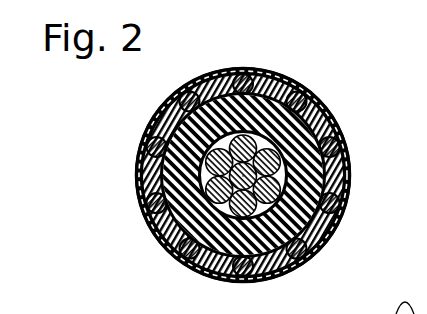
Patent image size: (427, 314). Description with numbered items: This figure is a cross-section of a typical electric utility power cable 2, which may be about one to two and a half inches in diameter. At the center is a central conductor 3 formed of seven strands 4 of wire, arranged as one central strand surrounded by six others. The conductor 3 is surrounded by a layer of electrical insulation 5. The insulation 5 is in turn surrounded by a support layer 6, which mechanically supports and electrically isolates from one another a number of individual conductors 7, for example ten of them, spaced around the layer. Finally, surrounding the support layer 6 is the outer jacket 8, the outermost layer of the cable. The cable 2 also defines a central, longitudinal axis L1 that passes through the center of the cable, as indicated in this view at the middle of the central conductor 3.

The cable 2 is at (84, 113).
The central conductor 3 is at (262, 140).
The strands 4 is at (214, 160).
The electrical insulation 5 is at (308, 147).
The support layer 6 is at (147, 165).
The individual conductors 7 is at (240, 86).
The outer jacket 8 is at (169, 98).
The central longitudinal axis L1 is at (247, 178).